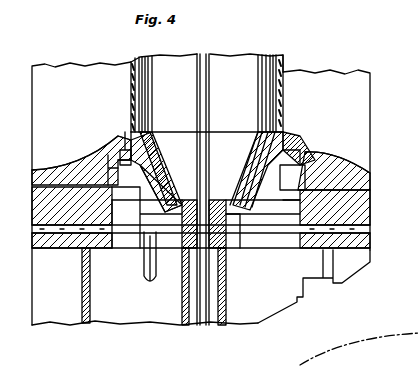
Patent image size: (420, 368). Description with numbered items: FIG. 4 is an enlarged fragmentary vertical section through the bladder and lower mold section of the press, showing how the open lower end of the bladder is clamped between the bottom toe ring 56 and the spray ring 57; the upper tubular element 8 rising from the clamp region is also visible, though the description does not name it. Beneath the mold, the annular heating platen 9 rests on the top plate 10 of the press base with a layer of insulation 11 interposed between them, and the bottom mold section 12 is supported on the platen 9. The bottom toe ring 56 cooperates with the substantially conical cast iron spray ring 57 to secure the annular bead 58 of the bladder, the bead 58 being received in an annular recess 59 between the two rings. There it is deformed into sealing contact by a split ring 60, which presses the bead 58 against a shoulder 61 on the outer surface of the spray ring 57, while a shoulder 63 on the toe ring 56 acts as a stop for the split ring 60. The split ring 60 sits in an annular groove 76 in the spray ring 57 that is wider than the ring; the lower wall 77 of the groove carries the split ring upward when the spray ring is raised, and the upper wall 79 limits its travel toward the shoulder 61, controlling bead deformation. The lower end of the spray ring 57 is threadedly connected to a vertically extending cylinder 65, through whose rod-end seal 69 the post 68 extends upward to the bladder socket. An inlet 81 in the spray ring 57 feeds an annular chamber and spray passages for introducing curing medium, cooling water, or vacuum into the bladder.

The tubular member 8 is at (133, 76).
The annular platen 9 is at (363, 207).
The top plate 10 is at (368, 254).
The layer of insulation 11 is at (372, 232).
The bottom mold section 12 is at (58, 166).
The bottom toe ring 56 is at (292, 138).
The spray ring 57 is at (248, 232).
The annular bead 58 is at (133, 140).
The annular recess 59 is at (292, 118).
The split ring 60 is at (296, 160).
The shoulder 61 is at (259, 134).
The shoulder 63 is at (102, 201).
The cylinder 65 is at (228, 296).
The post 68 is at (212, 79).
The seal 69 is at (222, 252).
The annular groove 76 is at (155, 145).
The lower wall 77 is at (163, 155).
The upper wall 79 is at (256, 148).
The inlet 81 is at (142, 268).